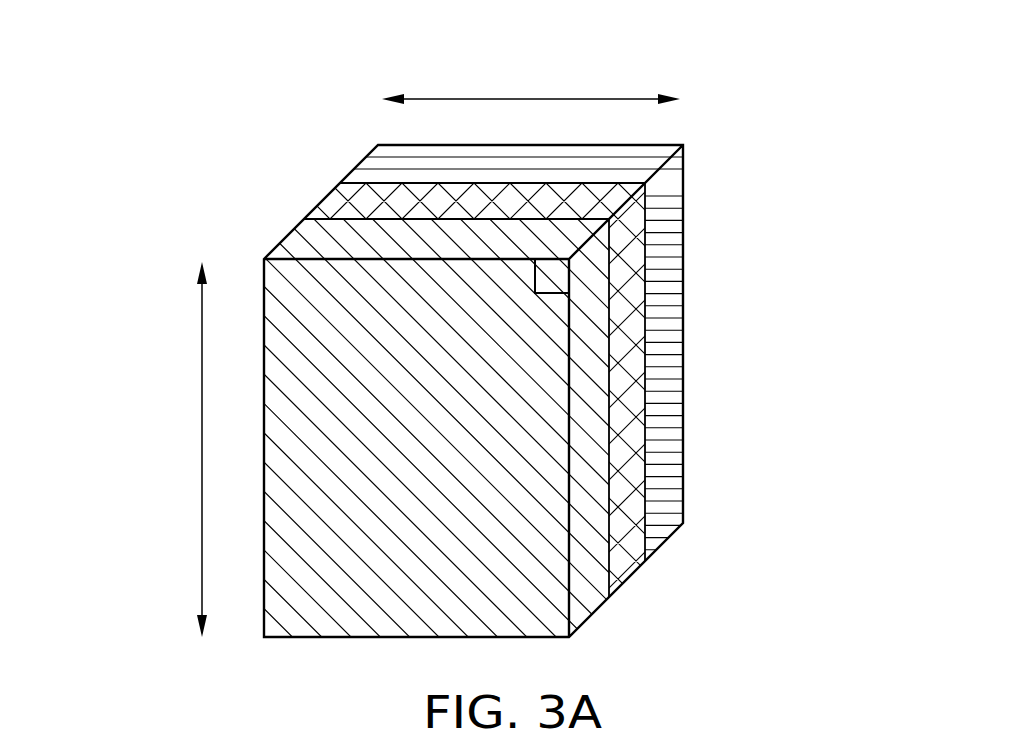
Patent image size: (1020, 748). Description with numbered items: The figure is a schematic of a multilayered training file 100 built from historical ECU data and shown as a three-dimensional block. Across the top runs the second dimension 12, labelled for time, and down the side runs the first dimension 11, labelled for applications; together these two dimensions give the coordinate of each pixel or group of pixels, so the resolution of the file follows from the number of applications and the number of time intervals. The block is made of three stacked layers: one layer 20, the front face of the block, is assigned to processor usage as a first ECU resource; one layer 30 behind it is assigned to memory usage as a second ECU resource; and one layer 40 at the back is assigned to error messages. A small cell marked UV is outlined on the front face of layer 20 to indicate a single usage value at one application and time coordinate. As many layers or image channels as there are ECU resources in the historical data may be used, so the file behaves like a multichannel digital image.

The training file 100 is at (510, 351).
The first dimension 11 is at (155, 450).
The second dimension 12 is at (570, 60).
The layer 20 is at (590, 608).
The layer 30 is at (623, 573).
The layer 40 is at (649, 535).
The unique visitor cell UV is at (569, 267).